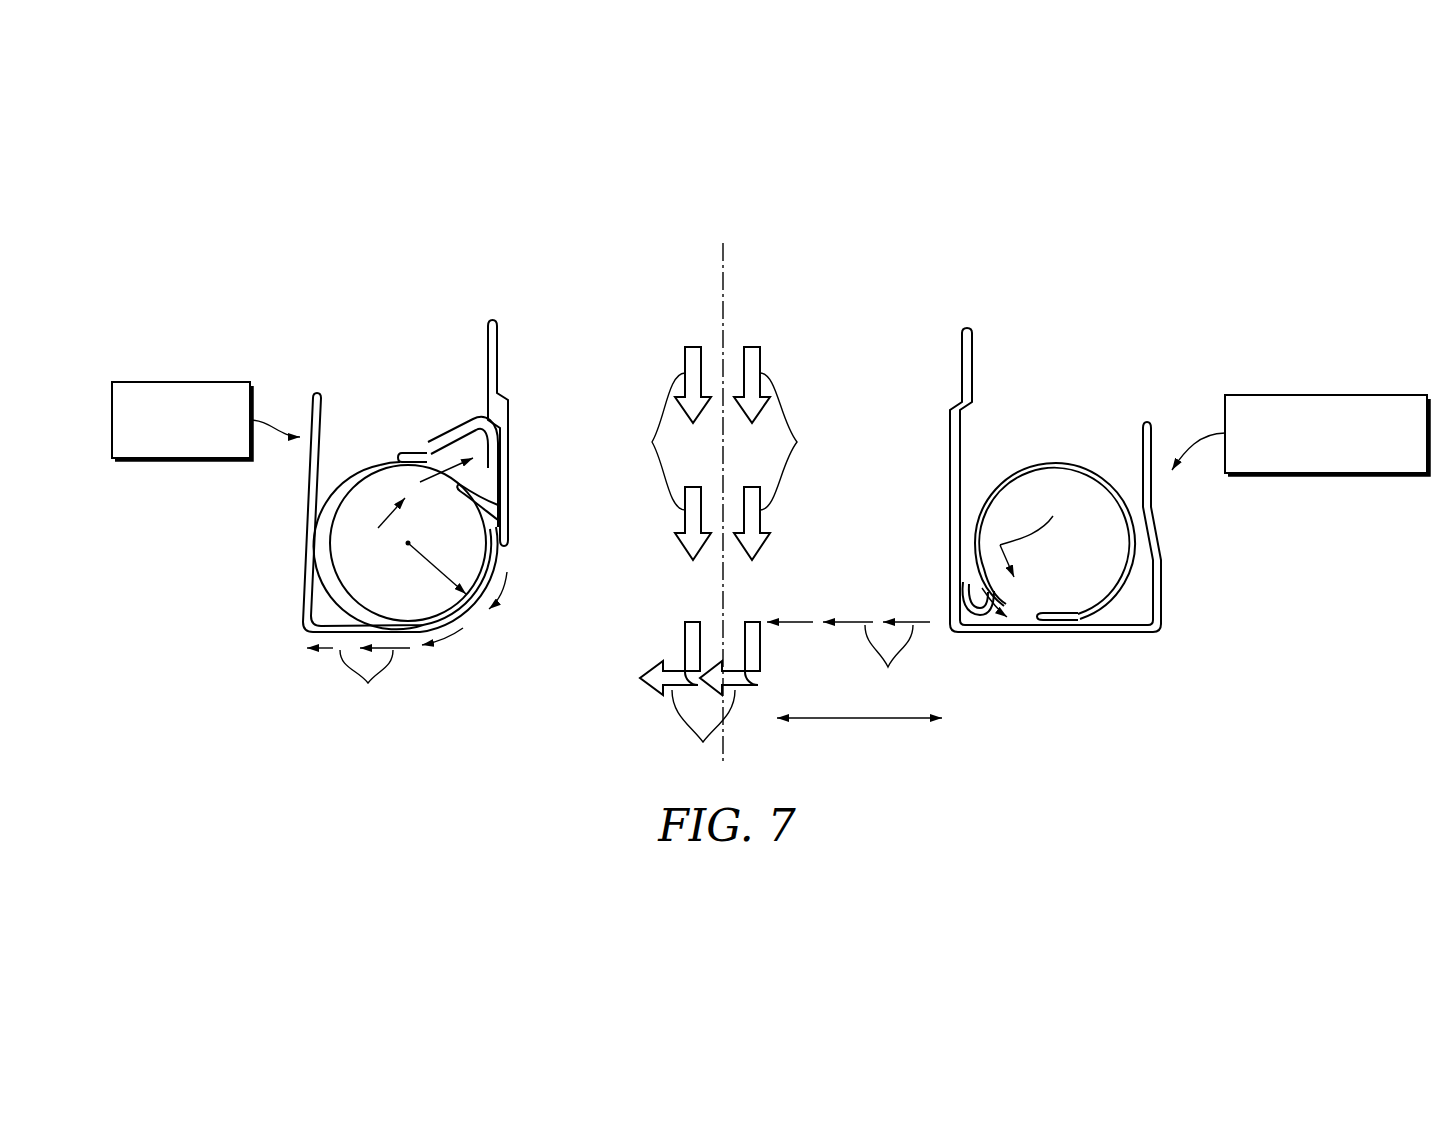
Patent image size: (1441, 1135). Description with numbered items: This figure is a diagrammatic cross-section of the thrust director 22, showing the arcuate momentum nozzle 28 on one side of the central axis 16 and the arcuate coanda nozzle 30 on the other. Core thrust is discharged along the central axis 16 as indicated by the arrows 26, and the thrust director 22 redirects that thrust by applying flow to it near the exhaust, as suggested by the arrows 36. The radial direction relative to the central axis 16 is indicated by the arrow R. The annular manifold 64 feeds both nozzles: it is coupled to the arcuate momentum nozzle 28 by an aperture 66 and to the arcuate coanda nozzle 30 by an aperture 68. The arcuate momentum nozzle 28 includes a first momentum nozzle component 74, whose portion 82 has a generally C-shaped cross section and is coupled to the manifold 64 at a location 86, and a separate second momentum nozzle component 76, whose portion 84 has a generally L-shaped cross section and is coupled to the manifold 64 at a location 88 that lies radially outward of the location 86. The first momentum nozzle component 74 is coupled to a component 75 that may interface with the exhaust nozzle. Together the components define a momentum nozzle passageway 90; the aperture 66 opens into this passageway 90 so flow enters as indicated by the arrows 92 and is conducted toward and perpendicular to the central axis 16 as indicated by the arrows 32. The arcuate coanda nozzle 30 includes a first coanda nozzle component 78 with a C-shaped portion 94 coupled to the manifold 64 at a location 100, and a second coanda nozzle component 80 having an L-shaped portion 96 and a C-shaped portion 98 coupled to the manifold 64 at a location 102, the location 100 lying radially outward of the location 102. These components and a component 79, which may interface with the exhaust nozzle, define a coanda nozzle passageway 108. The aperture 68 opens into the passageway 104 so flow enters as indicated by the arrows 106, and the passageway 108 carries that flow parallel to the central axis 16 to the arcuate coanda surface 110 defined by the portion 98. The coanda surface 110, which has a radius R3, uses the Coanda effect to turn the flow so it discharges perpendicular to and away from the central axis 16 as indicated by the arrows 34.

The central axis 16 is at (727, 276).
The thrust director 22 is at (915, 290).
The arrows 26 is at (722, 453).
The arcuate momentum nozzle 28 is at (1380, 395).
The arcuate coanda nozzle 30 is at (164, 382).
The arrows 32 is at (848, 661).
The arrows 34 is at (358, 682).
The arrows 36 is at (700, 697).
The manifold 64 is at (328, 578).
The aperture 66 is at (1024, 634).
The aperture 68 is at (444, 480).
The first momentum nozzle component 74 is at (998, 545).
The component 75 is at (949, 438).
The second momentum nozzle component 76 is at (1165, 579).
The first coanda nozzle component 78 is at (432, 441).
The component 79 is at (509, 458).
The second coanda nozzle component 80 is at (302, 628).
The portion 82 is at (972, 600).
The portion 84 is at (1139, 634).
The location 86 is at (975, 578).
The location 88 is at (1061, 611).
The momentum nozzle passageway 90 is at (992, 634).
The arrows 92 is at (1022, 606).
The portion 94 is at (463, 427).
The portion 96 is at (300, 544).
The portion 98 is at (472, 617).
The location 100 is at (415, 450).
The location 102 is at (503, 553).
The passageway 104 is at (498, 470).
The arrows 106 is at (417, 467).
The coanda nozzle passageway 108 is at (495, 490).
The arcuate coanda surface 110 is at (499, 565).
The radial direction R is at (857, 720).
The radius R3 is at (437, 573).